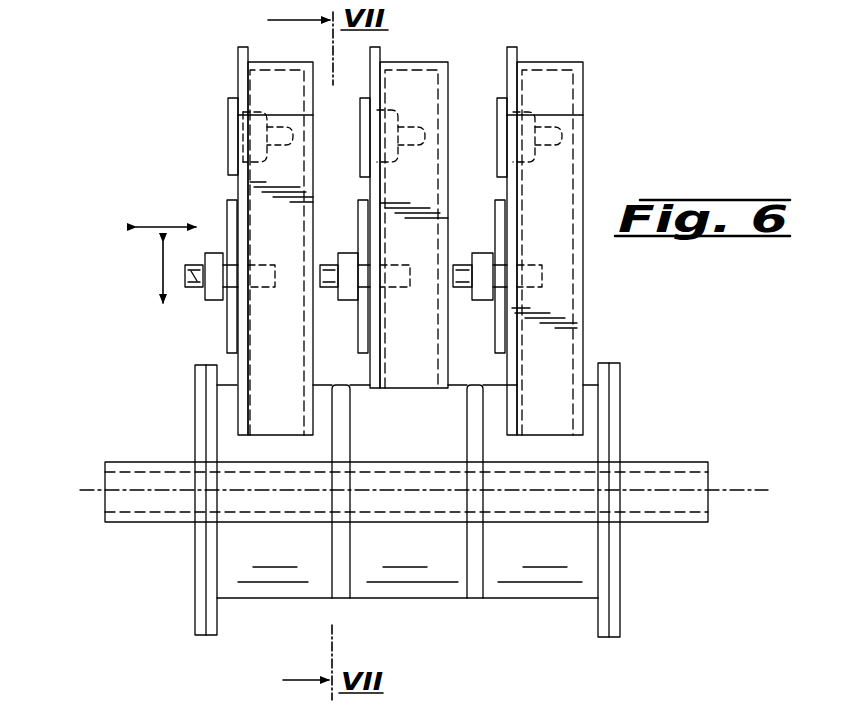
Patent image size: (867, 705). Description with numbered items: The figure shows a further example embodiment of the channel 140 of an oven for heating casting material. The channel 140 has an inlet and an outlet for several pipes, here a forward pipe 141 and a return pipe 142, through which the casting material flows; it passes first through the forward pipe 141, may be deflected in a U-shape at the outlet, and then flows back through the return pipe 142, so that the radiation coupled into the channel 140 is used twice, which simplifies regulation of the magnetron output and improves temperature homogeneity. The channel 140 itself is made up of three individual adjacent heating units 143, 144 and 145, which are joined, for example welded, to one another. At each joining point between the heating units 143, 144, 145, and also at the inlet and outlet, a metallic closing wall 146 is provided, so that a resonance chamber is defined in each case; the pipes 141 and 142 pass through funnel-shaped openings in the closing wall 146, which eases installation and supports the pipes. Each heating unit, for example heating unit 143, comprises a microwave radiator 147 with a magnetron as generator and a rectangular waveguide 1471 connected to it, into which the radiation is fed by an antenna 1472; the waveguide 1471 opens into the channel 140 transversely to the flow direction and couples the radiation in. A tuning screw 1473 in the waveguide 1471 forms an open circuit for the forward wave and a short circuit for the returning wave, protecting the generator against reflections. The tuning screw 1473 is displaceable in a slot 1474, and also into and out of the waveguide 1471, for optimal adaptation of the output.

The channel 140 is at (350, 511).
The forward pipe 141 is at (437, 469).
The return pipe 142 is at (662, 468).
The heating unit 143 is at (205, 231).
The heating unit 144 is at (434, 56).
The heating unit 145 is at (590, 86).
The closing wall 146 is at (475, 568).
The microwave radiator 147 is at (212, 127).
The waveguide 1471 is at (253, 196).
The antenna 1472 is at (247, 132).
The tuning screw 1473 is at (197, 289).
The slot 1474 is at (228, 312).